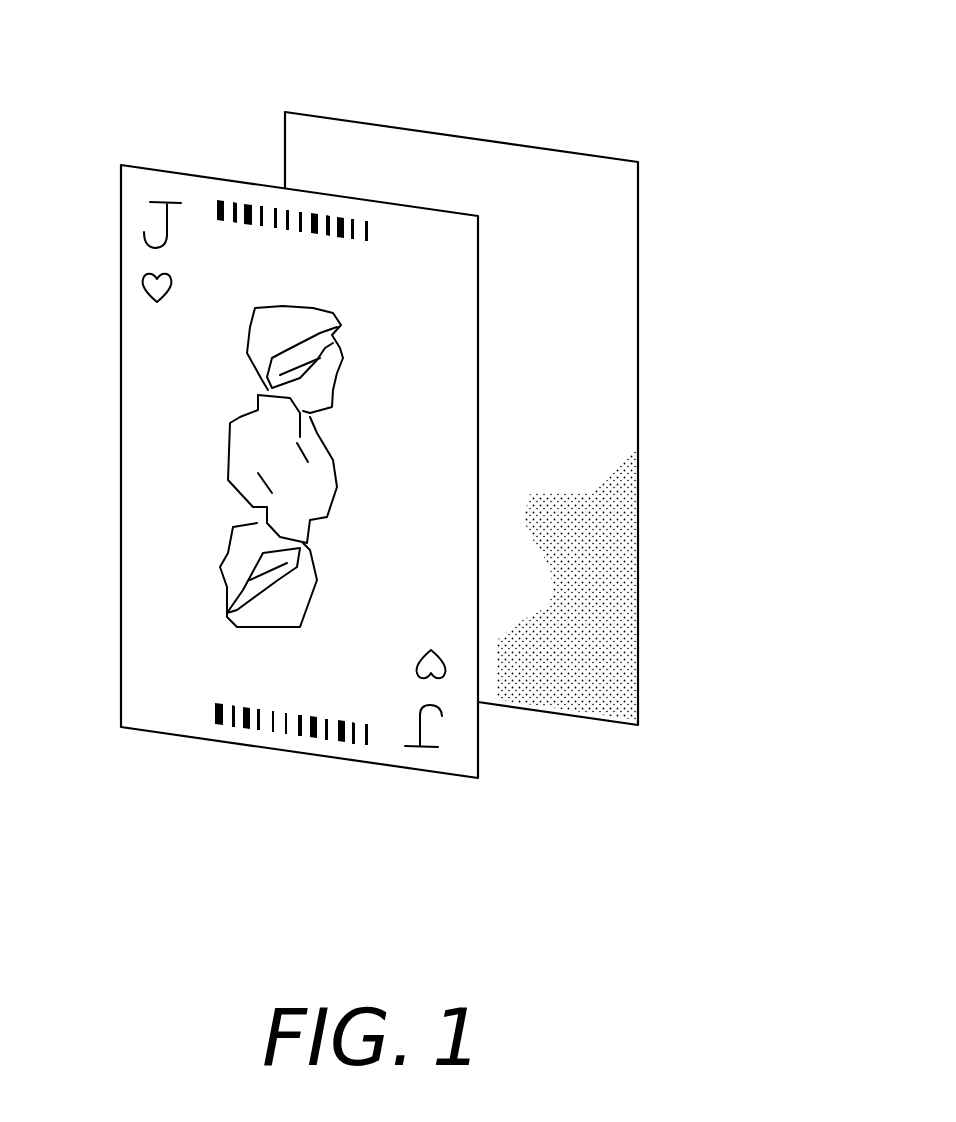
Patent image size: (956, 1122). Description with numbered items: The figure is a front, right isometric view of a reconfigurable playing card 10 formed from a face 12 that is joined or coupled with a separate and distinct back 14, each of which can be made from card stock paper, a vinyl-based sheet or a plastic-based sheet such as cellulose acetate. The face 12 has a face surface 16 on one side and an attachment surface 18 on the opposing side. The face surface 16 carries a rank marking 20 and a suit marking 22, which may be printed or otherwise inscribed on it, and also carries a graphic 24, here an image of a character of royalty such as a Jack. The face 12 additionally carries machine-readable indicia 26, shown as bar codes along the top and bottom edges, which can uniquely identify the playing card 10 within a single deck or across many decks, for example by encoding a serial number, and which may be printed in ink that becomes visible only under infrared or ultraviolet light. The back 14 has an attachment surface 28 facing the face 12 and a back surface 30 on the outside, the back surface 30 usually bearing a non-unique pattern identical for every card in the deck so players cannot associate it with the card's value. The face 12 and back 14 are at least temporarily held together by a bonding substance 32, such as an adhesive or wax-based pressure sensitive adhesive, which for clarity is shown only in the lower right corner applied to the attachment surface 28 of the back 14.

The reconfigurable playing card 10 is at (542, 768).
The face 12 is at (121, 680).
The back 14 is at (640, 487).
The face surface 16 is at (410, 542).
The attachment surface 18 is at (176, 254).
The rank marking 20 is at (125, 218).
The suit marking 22 is at (128, 298).
The graphic 24 is at (228, 433).
The machine-readable indicia 26 is at (360, 776).
The attachment surface 28 is at (564, 406).
The back surface 30 is at (562, 197).
The bonding substance 32 is at (593, 607).